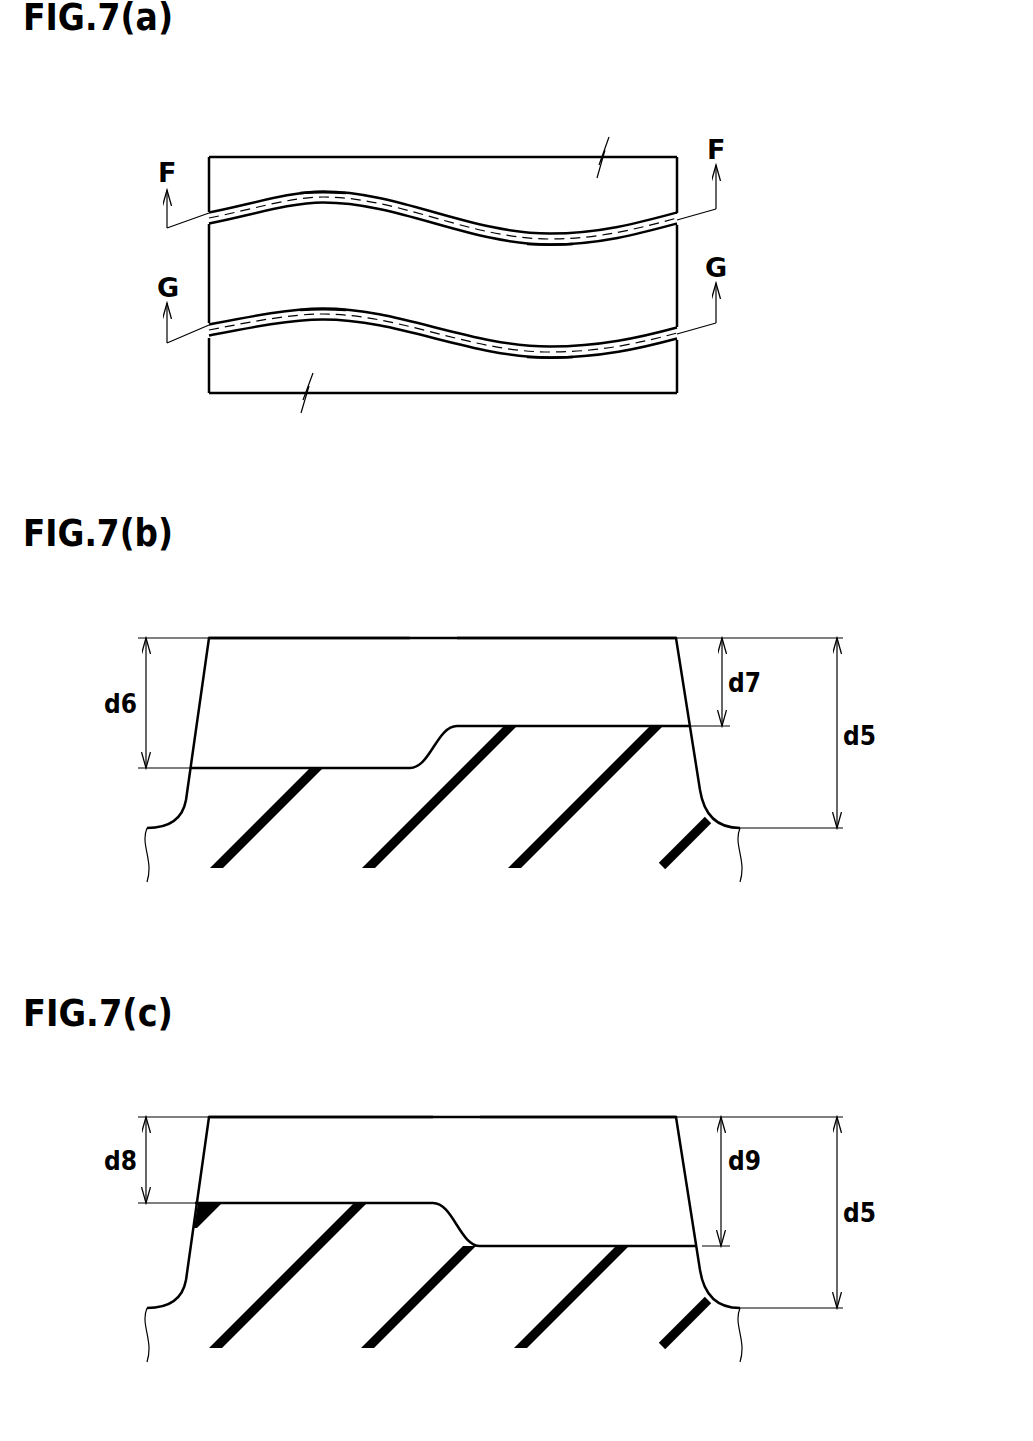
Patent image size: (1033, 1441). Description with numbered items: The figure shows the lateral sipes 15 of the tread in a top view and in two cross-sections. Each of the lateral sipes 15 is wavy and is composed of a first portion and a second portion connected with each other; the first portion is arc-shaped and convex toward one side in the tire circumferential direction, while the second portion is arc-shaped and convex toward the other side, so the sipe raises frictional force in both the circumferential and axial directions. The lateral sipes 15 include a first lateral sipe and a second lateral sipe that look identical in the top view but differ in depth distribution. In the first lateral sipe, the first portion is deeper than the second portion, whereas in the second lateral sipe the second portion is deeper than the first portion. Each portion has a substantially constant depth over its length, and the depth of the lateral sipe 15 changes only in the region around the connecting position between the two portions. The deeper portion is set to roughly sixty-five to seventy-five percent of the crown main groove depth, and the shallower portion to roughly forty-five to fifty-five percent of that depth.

The lateral sipe 15 is at (503, 83).